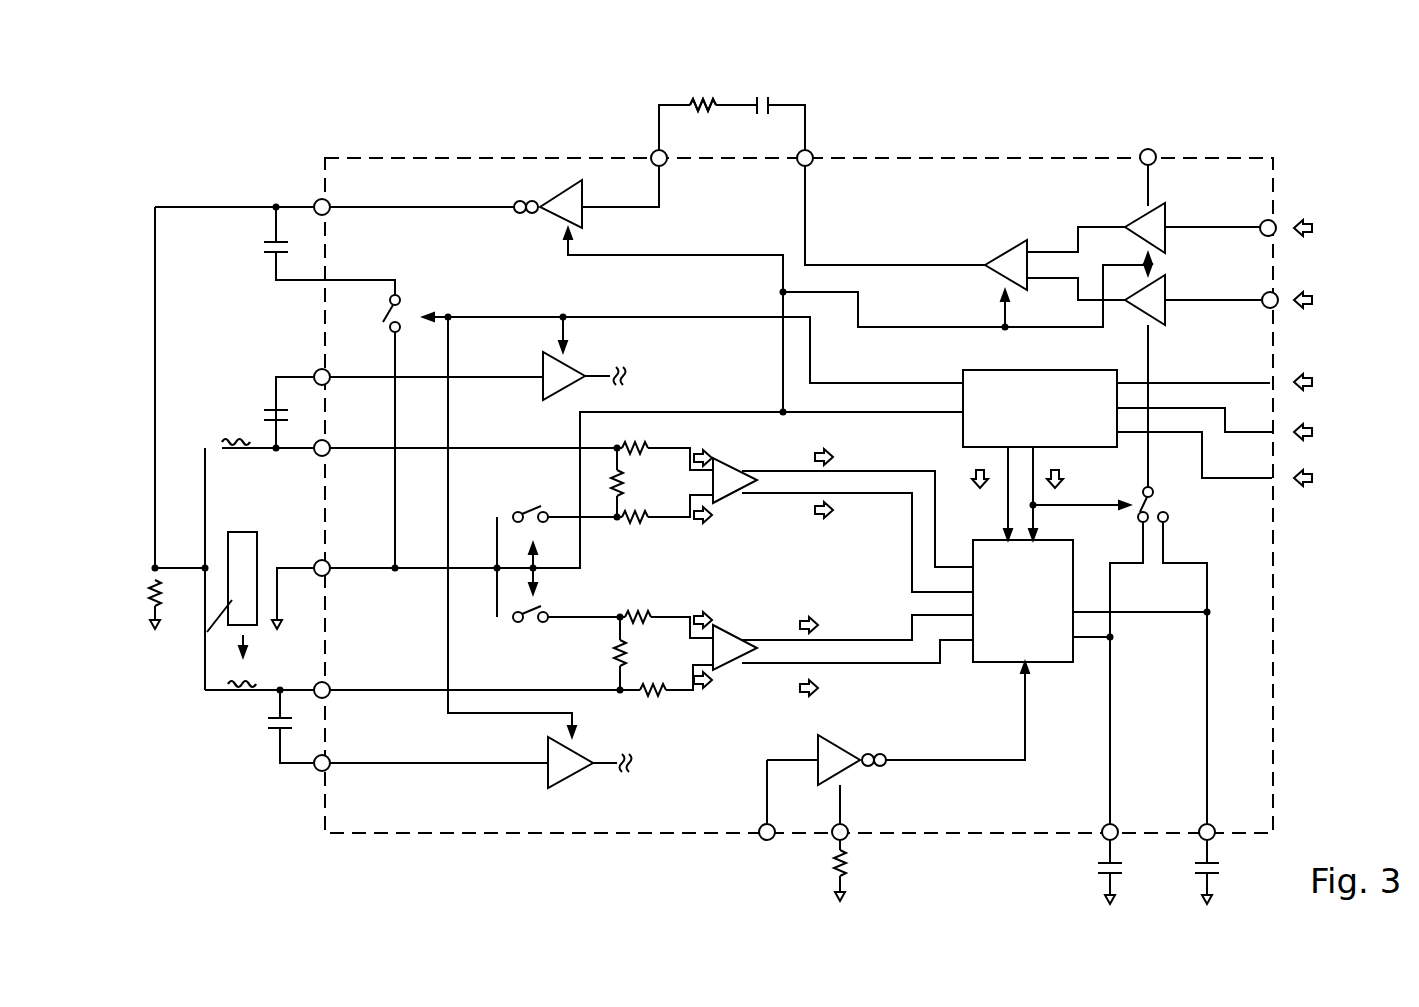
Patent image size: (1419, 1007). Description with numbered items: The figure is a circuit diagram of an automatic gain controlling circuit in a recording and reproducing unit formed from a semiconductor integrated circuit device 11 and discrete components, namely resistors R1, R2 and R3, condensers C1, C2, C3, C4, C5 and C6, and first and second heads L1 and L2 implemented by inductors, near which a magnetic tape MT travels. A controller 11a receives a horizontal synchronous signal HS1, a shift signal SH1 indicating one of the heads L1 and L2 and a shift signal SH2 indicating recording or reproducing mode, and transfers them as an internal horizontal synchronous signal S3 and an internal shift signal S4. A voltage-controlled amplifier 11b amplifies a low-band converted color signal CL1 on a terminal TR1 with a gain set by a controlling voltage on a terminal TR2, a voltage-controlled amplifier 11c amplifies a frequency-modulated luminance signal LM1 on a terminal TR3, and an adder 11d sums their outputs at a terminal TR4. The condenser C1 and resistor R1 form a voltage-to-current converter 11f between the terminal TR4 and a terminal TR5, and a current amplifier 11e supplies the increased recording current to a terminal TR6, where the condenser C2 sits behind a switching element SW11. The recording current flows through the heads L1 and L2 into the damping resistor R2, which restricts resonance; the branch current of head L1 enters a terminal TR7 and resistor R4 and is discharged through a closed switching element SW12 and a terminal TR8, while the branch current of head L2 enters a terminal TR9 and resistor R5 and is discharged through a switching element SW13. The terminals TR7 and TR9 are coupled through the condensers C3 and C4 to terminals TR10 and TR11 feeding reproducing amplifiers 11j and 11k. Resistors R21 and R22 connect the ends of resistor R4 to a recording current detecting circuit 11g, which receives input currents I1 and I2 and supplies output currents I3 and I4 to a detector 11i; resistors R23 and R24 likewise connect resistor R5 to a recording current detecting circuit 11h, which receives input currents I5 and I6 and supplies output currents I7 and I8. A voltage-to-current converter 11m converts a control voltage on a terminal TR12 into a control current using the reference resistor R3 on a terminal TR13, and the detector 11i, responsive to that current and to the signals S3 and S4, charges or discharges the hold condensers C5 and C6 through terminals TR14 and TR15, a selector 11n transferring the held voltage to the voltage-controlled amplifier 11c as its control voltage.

The semiconductor integrated circuit device 11 is at (1273, 600).
The controller 11a is at (1011, 370).
The voltage-controlled amplifier 11b is at (1152, 241).
The voltage-controlled amplifier 11c is at (1154, 316).
The adder 11d is at (997, 240).
The current amplifier 11e is at (563, 180).
The voltage-to-current converter 11f is at (870, 103).
The recording current detecting circuit 11g is at (730, 470).
The recording current detecting circuit 11h is at (728, 632).
The detector 11i is at (993, 662).
The reproducing amplifier 11j is at (543, 391).
The reproducing amplifier 11k is at (556, 782).
The voltage-to-current converter 11m is at (838, 750).
The selector 11n is at (1180, 511).
The terminal TR1 is at (1271, 220).
The terminal TR2 is at (1150, 152).
The terminal TR3 is at (1273, 295).
The terminal TR4 is at (814, 153).
The terminal TR5 is at (653, 153).
The terminal TR6 is at (316, 201).
The terminal TR7 is at (317, 456).
The terminal TR8 is at (318, 560).
The terminal TR9 is at (317, 682).
The terminal TR10 is at (316, 369).
The terminal TR11 is at (318, 772).
The terminal TR12 is at (768, 840).
The terminal TR13 is at (850, 838).
The terminal TR14 is at (1103, 840).
The terminal TR15 is at (1215, 840).
The resistor R1 is at (680, 104).
The damping resistor R2 is at (150, 598).
The reference resistor R3 is at (855, 873).
The resistor R4 is at (612, 505).
The resistor R5 is at (610, 658).
The resistor R21 is at (644, 448).
The resistor R22 is at (658, 530).
The resistor R23 is at (652, 625).
The resistor R24 is at (662, 698).
The condenser C1 is at (775, 103).
The condenser C2 is at (271, 256).
The condenser C3 is at (270, 406).
The condenser C4 is at (273, 733).
The hold condenser C5 is at (1104, 882).
The hold condenser C6 is at (1216, 875).
The first head L1 is at (248, 452).
The second head L2 is at (233, 696).
The magnetic tape MT is at (205, 655).
The switching element SW11 is at (402, 295).
The switching element SW12 is at (533, 511).
The switching element SW13 is at (538, 623).
The low-band converted color signal CL1 is at (1326, 205).
The frequency-modulated luminance signal LM1 is at (1335, 293).
The horizontal synchronous signal HS1 is at (1308, 374).
The shift signal SH1 is at (1320, 422).
The shift signal SH2 is at (1315, 480).
The internal horizontal synchronous signal S3 is at (957, 468).
The internal shift signal S4 is at (1067, 478).
The input current I1 is at (692, 451).
The input current I2 is at (696, 522).
The output current I3 is at (820, 452).
The output current I4 is at (809, 516).
The input current I5 is at (694, 614).
The input current I6 is at (698, 686).
The output current I7 is at (800, 618).
The output current I8 is at (790, 688).